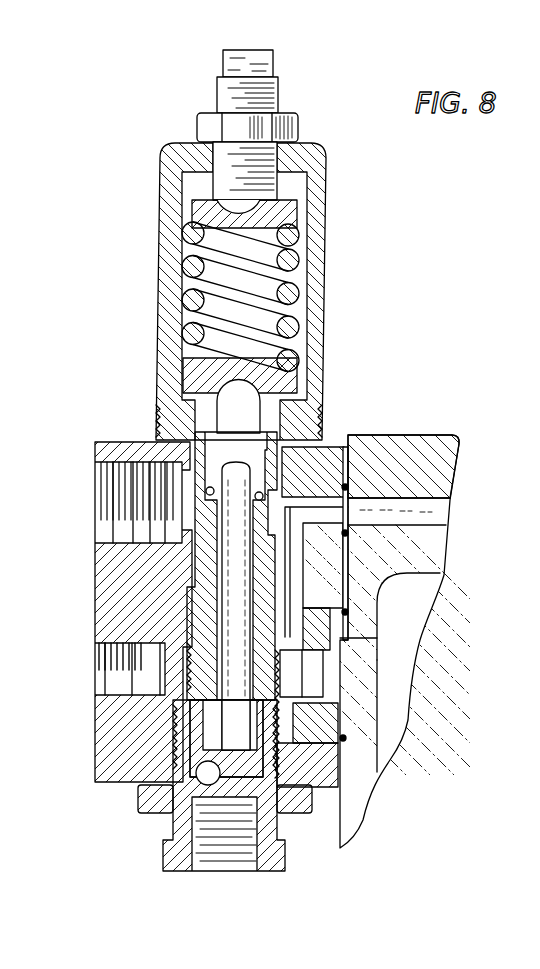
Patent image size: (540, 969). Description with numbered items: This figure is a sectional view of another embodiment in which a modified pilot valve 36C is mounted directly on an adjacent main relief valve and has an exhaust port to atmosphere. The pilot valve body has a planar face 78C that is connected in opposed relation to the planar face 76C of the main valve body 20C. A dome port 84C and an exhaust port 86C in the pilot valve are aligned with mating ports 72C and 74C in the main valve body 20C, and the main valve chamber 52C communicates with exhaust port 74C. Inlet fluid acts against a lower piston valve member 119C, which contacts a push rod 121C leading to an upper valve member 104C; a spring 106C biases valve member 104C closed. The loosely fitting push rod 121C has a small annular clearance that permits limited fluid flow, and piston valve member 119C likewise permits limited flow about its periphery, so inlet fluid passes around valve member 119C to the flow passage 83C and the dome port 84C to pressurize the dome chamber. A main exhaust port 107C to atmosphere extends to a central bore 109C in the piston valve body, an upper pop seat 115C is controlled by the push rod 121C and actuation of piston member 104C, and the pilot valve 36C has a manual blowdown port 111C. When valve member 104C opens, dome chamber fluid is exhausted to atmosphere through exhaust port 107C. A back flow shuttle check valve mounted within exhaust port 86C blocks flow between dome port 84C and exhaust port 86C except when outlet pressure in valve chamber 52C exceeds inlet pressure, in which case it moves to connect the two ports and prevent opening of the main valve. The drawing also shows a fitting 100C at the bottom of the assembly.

The main valve body 20C is at (433, 438).
The pilot valve 36C is at (342, 385).
The main valve chamber 52C is at (390, 720).
The mating port 72C is at (446, 513).
The exhaust port 74C is at (325, 672).
The planar face 76C is at (456, 550).
The planar face 78C is at (355, 443).
The flow passage 83C is at (388, 588).
The dome port 84C is at (347, 501).
The exhaust port 86C is at (350, 656).
The fitting 100C is at (158, 790).
The upper valve member 104C is at (236, 500).
The spring 106C is at (303, 288).
The main exhaust port 107C is at (112, 513).
The central bore 109C is at (190, 598).
The manual blowdown port 111C is at (94, 656).
The upper pop seat 115C is at (212, 508).
The lower piston valve member 119C is at (200, 713).
The push rod 121C is at (206, 492).